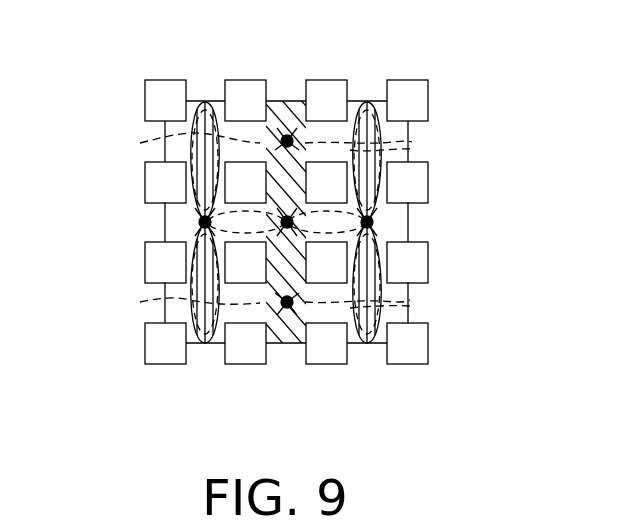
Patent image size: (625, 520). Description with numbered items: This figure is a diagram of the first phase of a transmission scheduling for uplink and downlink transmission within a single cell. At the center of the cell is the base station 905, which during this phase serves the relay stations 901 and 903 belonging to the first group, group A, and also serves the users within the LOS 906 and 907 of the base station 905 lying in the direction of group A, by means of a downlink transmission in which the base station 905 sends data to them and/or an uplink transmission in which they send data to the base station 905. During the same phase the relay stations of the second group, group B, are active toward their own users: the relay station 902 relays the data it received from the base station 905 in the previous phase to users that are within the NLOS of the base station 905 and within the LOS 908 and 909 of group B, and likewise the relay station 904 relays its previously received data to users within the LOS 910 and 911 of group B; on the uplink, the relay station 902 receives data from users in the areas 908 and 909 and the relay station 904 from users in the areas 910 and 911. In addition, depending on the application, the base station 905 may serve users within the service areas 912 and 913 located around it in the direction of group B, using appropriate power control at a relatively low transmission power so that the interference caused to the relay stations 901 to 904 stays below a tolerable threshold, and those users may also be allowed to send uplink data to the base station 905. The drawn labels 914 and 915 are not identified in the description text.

The relay station 901 is at (287, 135).
The relay station 902 is at (367, 222).
The relay station 903 is at (287, 343).
The relay station 904 is at (205, 222).
The base station 905 is at (205, 101).
The LOS of base station 906 is at (410, 149).
The LOS of base station 907 is at (410, 306).
The LOS of group B 908 is at (412, 142).
The LOS of group B 909 is at (410, 300).
The LOS of group B 910 is at (140, 143).
The LOS of group B 911 is at (140, 302).
The service area 912 is at (302, 343).
The service area 913 is at (205, 343).
The pad 914 is at (165, 90).
The upper right hatched electrode 915 is at (360, 101).